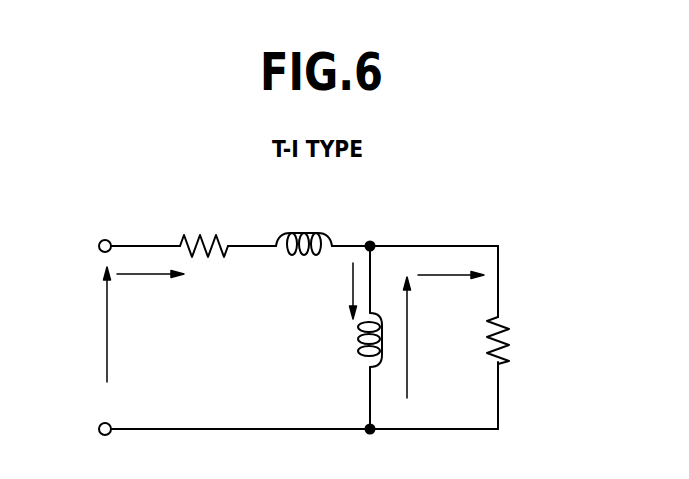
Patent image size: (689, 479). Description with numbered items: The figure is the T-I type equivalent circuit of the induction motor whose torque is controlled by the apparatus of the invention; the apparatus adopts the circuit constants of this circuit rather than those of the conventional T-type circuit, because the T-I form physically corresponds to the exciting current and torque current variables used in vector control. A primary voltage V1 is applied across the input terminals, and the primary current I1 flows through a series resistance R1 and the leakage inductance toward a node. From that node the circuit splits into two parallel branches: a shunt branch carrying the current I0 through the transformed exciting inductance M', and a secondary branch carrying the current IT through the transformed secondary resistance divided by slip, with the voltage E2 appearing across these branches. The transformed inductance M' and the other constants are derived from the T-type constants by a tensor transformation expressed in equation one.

The primary resistance R1 is at (204, 230).
The exciting inductance of T-I type circuit M' is at (356, 340).
The primary voltage V1 is at (93, 324).
The primary current I1 is at (150, 287).
The exciting current I0 is at (341, 291).
The secondary induced voltage E2 is at (407, 337).
The torque current IT is at (451, 289).